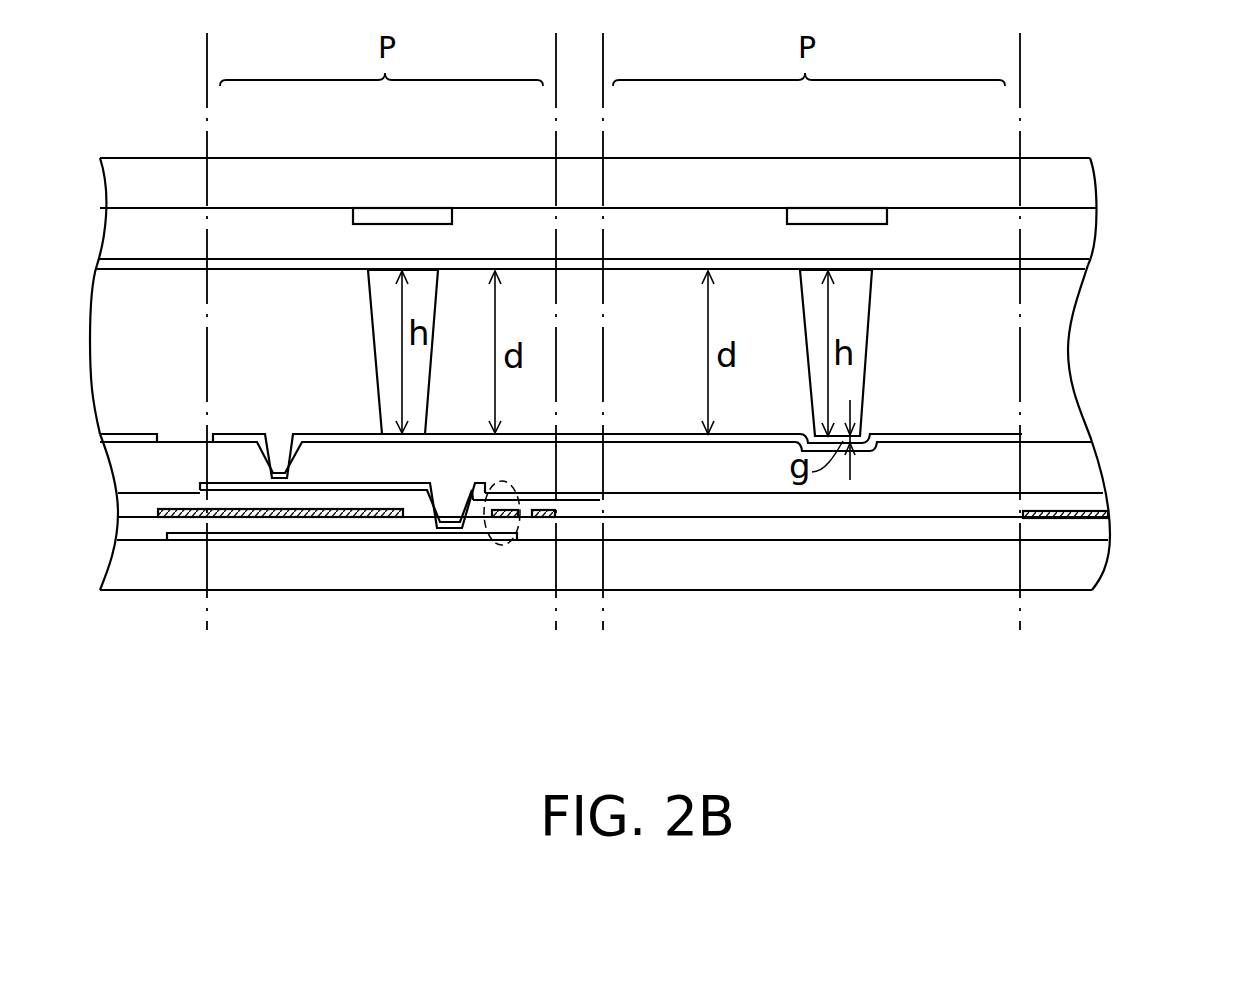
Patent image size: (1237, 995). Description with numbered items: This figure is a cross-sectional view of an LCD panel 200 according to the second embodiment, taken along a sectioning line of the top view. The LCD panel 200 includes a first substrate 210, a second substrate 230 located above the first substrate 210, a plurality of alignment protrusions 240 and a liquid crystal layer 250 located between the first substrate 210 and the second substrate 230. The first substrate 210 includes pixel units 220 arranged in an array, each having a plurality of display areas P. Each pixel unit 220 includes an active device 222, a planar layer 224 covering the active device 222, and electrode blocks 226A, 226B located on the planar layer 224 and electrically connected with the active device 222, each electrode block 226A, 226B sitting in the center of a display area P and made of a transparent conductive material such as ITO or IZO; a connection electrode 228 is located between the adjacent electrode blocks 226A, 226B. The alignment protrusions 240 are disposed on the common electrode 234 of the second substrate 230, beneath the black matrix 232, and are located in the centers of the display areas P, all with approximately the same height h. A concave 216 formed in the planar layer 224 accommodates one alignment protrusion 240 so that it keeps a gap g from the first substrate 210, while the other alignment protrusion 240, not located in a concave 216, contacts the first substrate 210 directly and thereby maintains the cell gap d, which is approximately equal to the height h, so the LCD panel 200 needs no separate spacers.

The LCD panel 200 is at (1118, 683).
The first substrate 210 is at (878, 604).
The concave 216 is at (862, 433).
The pixel unit 220 is at (790, 674).
The active device 222 is at (498, 545).
The planar layer 224 is at (380, 470).
The electrode block 226A is at (327, 440).
The electrode block 226B is at (763, 440).
The connection electrode 228 is at (580, 440).
The second substrate 230 is at (1085, 148).
The black matrix 232 is at (425, 217).
The common electrode 234 is at (1085, 268).
The alignment protrusion 240 is at (373, 290).
The liquid crystal layer 250 is at (1070, 360).